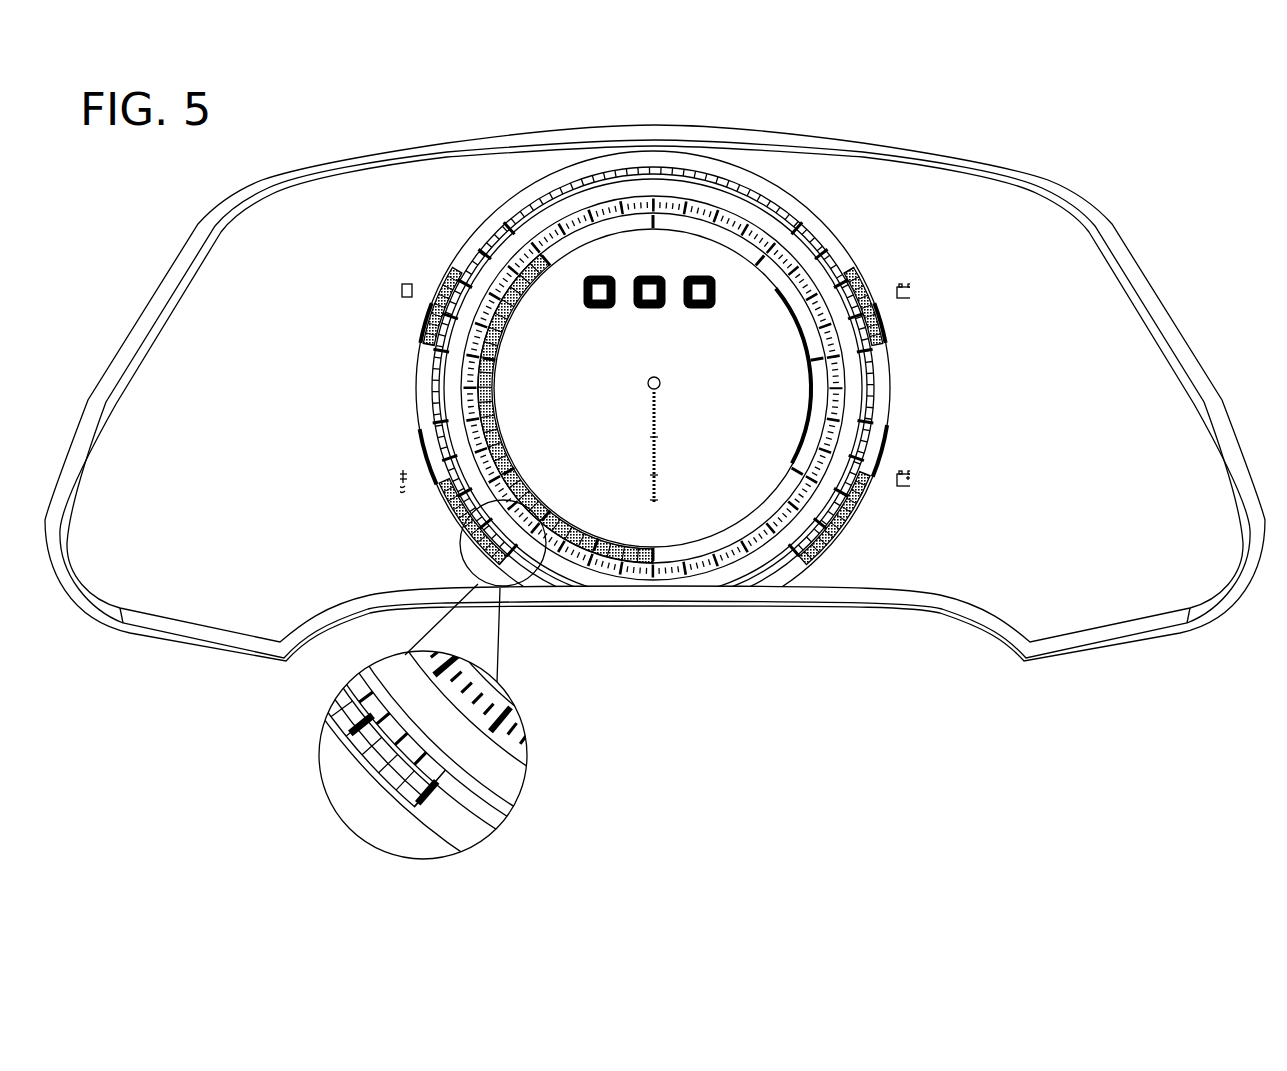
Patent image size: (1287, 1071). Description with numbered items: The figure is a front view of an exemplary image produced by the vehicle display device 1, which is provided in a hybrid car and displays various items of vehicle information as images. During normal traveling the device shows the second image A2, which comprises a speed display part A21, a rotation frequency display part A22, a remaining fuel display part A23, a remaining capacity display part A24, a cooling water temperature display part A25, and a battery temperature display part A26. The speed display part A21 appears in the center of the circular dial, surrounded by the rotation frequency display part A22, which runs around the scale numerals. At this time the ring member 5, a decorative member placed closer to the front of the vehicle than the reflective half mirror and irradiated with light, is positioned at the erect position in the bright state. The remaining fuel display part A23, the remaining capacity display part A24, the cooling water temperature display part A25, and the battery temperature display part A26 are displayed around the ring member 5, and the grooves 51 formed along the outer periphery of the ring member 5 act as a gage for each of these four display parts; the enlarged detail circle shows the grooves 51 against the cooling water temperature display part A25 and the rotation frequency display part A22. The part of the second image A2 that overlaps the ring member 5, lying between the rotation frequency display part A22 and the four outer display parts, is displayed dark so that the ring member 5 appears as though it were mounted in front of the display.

The vehicle display device 1 is at (1062, 146).
The ring member 5 is at (778, 217).
The grooves 51 is at (523, 588).
The second image A2 is at (877, 203).
The speed display part A21 is at (610, 262).
The rotation frequency display part A22 is at (522, 309).
The remaining fuel display part A23 is at (398, 316).
The remaining capacity display part A24 is at (900, 270).
The cooling water temperature display part A25 is at (405, 500).
The battery temperature display part A26 is at (898, 497).